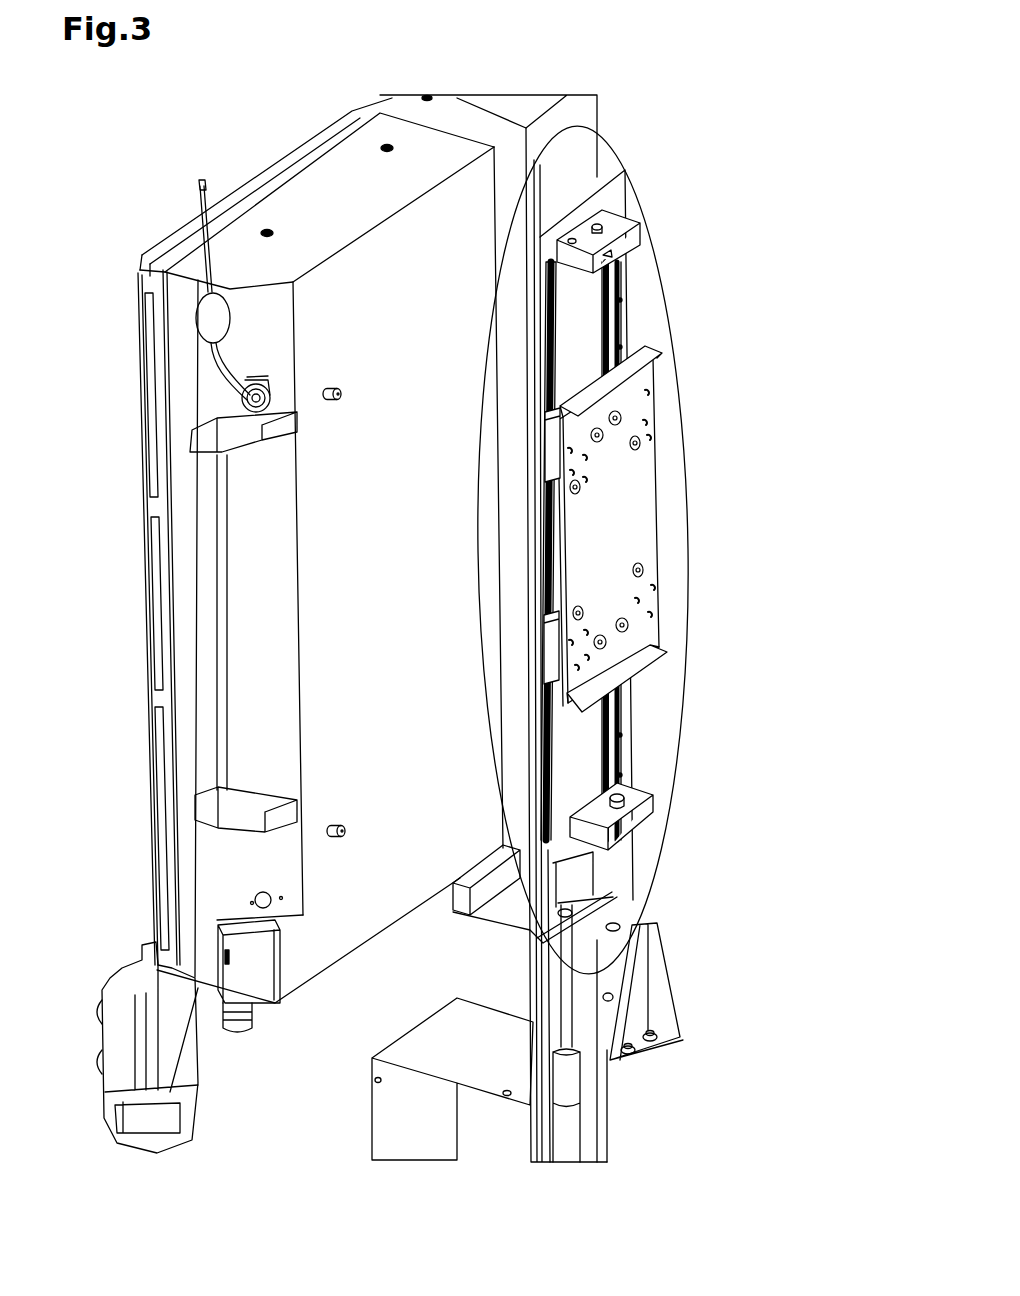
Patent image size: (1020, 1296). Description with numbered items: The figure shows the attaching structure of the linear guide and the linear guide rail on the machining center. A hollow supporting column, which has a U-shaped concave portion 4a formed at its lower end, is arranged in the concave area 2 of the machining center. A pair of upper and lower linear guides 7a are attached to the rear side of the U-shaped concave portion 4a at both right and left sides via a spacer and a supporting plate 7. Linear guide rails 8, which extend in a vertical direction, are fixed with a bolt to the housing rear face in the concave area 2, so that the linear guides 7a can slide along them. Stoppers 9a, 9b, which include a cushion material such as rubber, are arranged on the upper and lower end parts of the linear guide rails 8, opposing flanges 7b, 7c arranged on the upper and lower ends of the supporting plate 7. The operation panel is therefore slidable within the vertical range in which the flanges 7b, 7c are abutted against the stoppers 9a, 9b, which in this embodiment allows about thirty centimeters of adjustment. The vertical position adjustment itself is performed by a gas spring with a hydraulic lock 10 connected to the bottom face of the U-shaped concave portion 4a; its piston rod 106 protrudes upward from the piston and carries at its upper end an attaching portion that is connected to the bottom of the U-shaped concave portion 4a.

The concave area 2 is at (347, 185).
The U-shaped concave portion 4a is at (517, 628).
The supporting plate 7 is at (630, 527).
The linear guides 7a is at (553, 627).
The upper flange 7b is at (642, 358).
The lower flange 7c is at (640, 662).
The linear guide rails 8 is at (622, 327).
The upper stopper 9a is at (653, 258).
The lower stopper 9b is at (633, 793).
The gas spring with a hydraulic lock 10 is at (567, 1135).
The piston rod 106 is at (612, 1068).